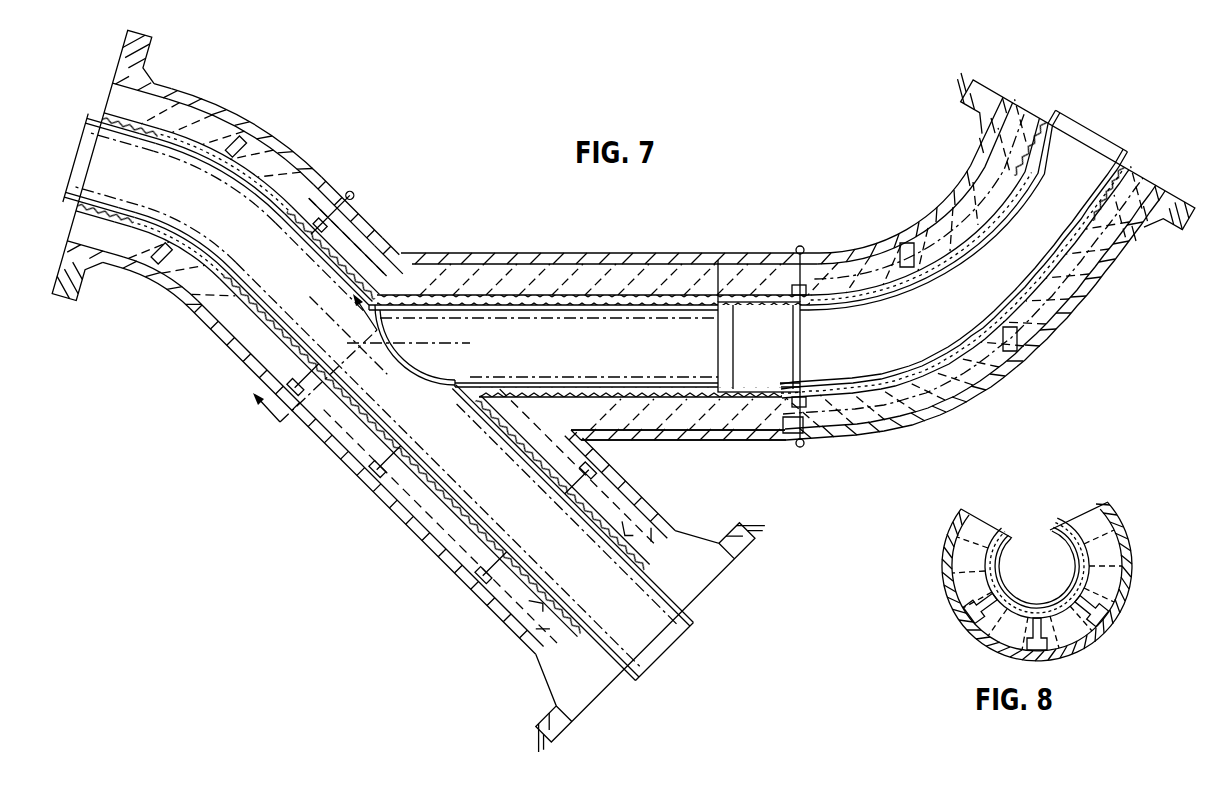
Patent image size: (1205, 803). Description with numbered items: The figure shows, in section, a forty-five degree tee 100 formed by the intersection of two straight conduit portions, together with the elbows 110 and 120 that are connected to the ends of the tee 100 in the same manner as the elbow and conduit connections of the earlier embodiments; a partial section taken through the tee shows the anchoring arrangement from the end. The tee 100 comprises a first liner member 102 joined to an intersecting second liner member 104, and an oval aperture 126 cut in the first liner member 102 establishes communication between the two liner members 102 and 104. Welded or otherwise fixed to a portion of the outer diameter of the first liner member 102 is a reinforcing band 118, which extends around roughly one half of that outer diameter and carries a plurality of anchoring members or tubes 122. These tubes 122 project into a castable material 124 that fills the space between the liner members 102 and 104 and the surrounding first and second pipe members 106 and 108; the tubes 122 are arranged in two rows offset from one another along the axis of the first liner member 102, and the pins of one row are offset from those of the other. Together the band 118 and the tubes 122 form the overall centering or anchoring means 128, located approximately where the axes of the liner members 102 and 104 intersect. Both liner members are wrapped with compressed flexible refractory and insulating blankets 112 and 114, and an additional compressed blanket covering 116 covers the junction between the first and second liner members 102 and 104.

In FIG. 7, the tee 100 is at (660, 212).
In FIG. 7, the first liner member 102 is at (458, 503).
In FIG. 8, the first liner member 102 is at (1050, 530).
In FIG. 7, the second liner member 104 is at (586, 311).
In FIG. 7, the first pipe member 106 is at (656, 500).
In FIG. 8, the first pipe member 106 is at (1148, 478).
In FIG. 7, the second pipe member 108 is at (685, 433).
In FIG. 7, the elbow 110 is at (331, 165).
In FIG. 7, the compressed flexible refractory and insulating blanket 112 is at (386, 479).
In FIG. 8, the compressed flexible refractory and insulating blanket 112 is at (982, 560).
In FIG. 7, the compressed flexible refractory and insulating blanket 114 is at (671, 288).
In FIG. 7, the additional compressed blanket covering 116 is at (389, 248).
In FIG. 7, the reinforcing band 118 is at (342, 406).
In FIG. 8, the reinforcing band 118 is at (1085, 569).
In FIG. 7, the elbow 120 is at (926, 192).
In FIG. 7, the anchoring members or tubes 122 is at (298, 373).
In FIG. 8, the anchoring members or tubes 122 is at (1104, 608).
In FIG. 7, the castable material 124 is at (467, 533).
In FIG. 8, the castable material 124 is at (958, 603).
In FIG. 7, the oval aperture 126 is at (456, 381).
In FIG. 7, the centering or anchoring means 128 is at (354, 371).